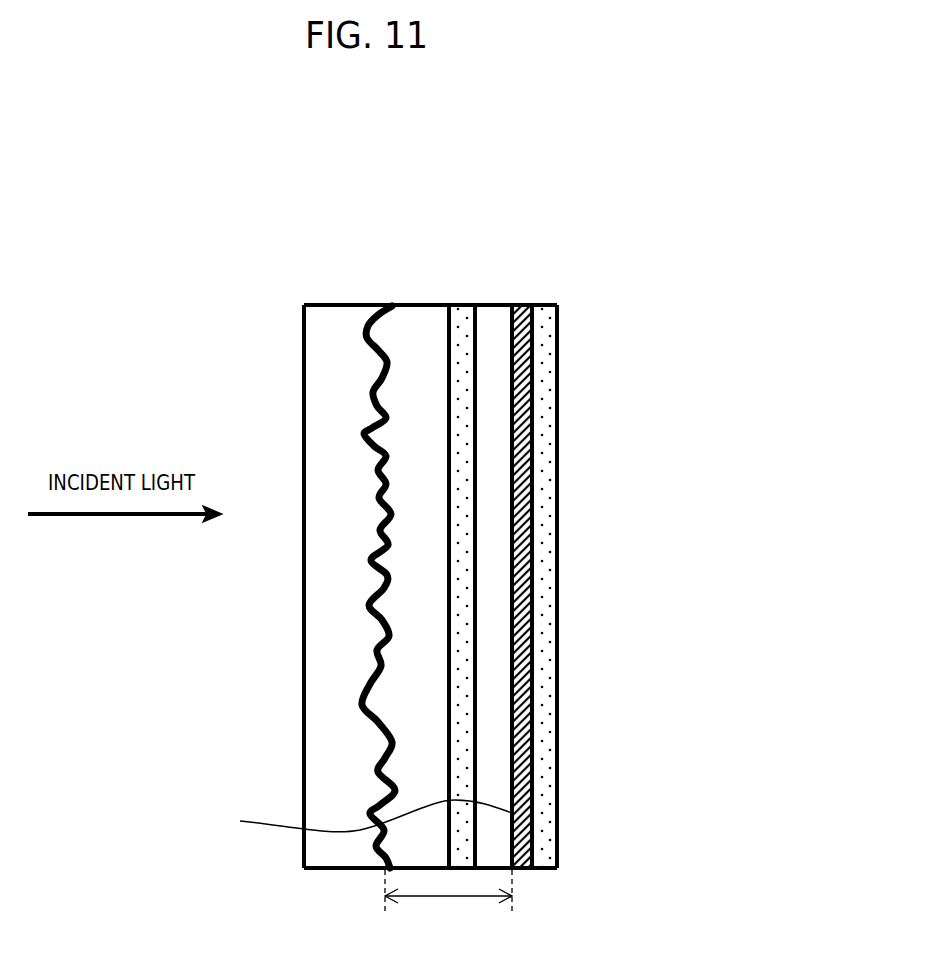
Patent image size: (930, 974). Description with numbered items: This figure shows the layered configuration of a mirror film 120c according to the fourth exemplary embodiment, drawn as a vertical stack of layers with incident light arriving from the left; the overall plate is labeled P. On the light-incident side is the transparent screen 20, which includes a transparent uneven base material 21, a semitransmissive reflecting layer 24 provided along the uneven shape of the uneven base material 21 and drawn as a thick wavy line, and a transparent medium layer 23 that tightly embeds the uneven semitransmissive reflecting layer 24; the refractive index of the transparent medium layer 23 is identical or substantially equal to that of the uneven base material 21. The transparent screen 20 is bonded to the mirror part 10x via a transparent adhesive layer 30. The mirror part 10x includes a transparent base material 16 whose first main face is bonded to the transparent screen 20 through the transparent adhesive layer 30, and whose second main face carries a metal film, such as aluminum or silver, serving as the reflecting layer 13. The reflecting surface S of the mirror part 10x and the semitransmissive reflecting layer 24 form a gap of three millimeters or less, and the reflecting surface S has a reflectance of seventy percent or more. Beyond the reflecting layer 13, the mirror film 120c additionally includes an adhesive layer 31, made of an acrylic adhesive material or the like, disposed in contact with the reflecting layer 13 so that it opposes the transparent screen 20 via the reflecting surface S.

The transparent screen 20 is at (450, 232).
The uneven base material 21 is at (337, 305).
The semitransmissive reflecting layer 24 is at (387, 305).
The transparent medium layer 23 is at (437, 305).
The transparent adhesive layer 30 is at (457, 305).
The mirror part 10x is at (557, 232).
The transparent base material 16 is at (490, 305).
The reflecting layer 13 is at (519, 305).
The adhesive layer 31 is at (553, 305).
The mirror film 120c is at (567, 878).
The polarizing plate P is at (304, 358).
The reflecting surface S is at (366, 819).